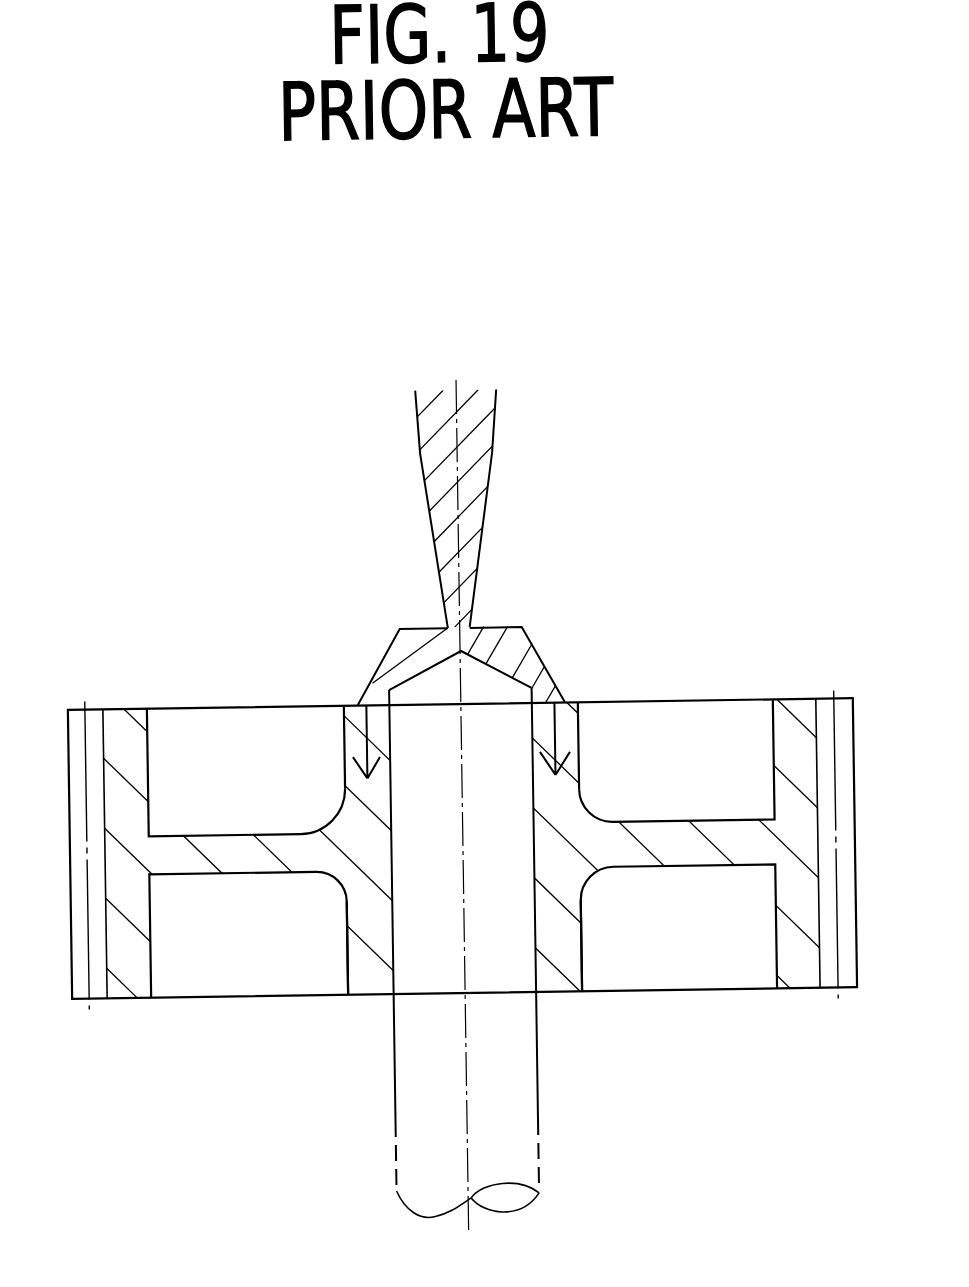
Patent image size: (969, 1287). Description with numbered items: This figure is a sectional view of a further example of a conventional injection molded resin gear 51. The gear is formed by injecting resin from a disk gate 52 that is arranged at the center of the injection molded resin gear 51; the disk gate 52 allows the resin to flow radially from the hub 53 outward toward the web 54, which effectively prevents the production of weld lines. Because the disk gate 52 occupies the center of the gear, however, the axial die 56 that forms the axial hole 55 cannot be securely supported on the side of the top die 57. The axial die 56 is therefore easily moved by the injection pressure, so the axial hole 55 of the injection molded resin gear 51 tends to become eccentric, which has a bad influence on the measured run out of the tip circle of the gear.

The injection molded resin gear 51 is at (714, 690).
The disk gate 52 is at (498, 637).
The hub 53 is at (346, 753).
The web 54 is at (219, 839).
The axial hole 55 is at (532, 943).
The axial die 56 is at (392, 1079).
The top die 57 is at (335, 521).